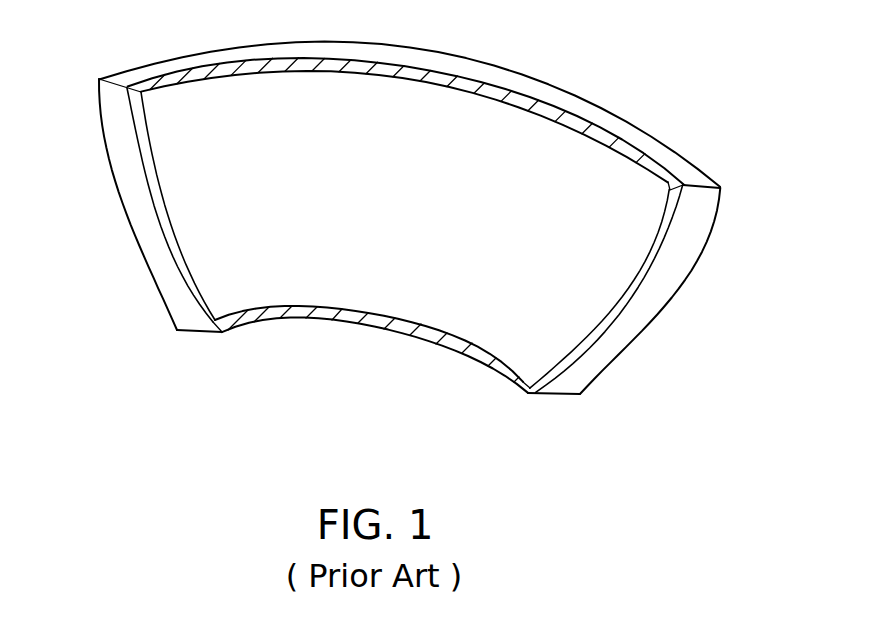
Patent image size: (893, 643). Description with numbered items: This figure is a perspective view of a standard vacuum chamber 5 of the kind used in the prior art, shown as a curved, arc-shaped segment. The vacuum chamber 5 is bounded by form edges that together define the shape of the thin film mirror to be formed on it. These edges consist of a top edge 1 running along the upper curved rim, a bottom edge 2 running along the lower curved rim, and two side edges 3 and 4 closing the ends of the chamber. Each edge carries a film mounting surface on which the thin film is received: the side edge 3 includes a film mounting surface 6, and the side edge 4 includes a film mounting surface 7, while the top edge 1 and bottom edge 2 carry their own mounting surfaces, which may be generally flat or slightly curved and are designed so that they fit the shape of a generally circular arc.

The top edge 1 is at (615, 140).
The bottom edge 2 is at (472, 357).
The side edge 3 is at (645, 283).
The side edge 4 is at (158, 213).
The vacuum chamber 5 is at (717, 213).
The film mounting surface 6 is at (657, 232).
The film mounting surface 7 is at (155, 167).